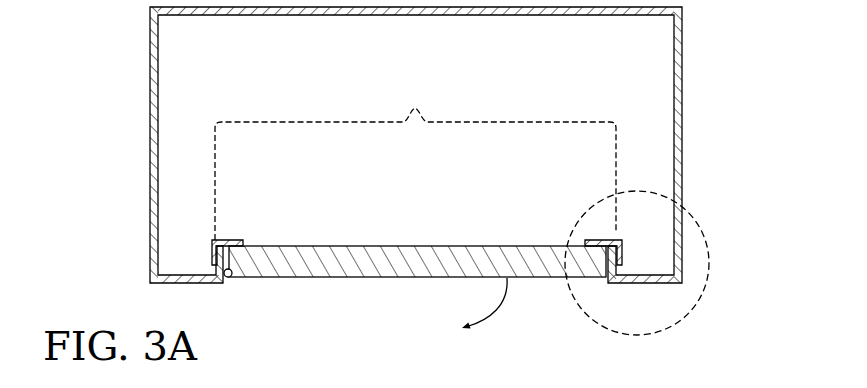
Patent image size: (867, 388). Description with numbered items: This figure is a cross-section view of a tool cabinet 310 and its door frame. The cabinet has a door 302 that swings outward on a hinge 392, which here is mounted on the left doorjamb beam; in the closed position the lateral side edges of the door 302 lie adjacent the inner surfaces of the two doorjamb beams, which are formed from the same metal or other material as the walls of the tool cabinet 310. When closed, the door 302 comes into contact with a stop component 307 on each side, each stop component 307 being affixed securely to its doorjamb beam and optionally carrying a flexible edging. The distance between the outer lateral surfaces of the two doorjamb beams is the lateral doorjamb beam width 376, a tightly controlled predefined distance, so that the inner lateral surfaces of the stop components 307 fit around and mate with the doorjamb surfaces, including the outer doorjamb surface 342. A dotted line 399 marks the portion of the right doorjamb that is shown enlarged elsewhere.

The tool cabinet 310 is at (148, 143).
The door 302 is at (388, 279).
The stop component 307 is at (230, 240).
The hinge 392 is at (229, 280).
The lateral doorjamb beam width 376 is at (415, 159).
The outer doorjamb surface 342 is at (606, 282).
The dotted line 399 is at (698, 303).